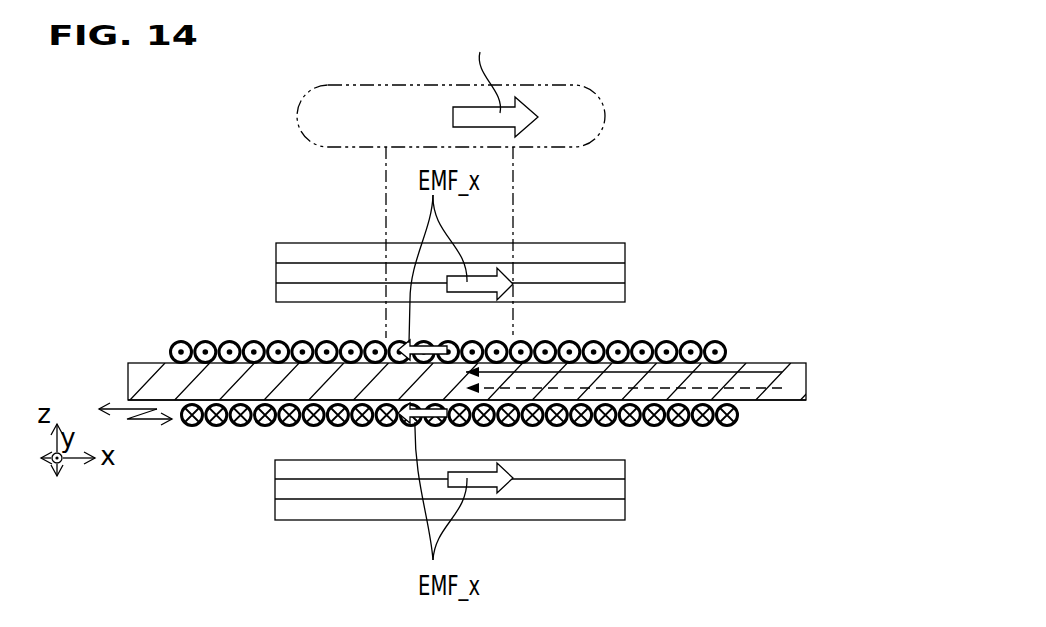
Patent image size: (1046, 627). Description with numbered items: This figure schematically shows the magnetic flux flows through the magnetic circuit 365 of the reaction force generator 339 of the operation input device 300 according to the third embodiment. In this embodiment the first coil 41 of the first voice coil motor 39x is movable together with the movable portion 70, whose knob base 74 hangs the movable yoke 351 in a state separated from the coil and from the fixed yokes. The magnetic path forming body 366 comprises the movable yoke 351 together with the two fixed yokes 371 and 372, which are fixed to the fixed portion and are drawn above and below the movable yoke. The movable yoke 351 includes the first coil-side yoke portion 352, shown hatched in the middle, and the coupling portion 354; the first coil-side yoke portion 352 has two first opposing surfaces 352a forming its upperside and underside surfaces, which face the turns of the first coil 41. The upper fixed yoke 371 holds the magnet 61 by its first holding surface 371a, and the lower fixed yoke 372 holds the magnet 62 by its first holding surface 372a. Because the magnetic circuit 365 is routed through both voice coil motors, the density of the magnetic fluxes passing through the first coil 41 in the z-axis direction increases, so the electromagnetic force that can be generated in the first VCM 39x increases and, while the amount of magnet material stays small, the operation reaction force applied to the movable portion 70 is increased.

The operation input device 300 is at (494, 84).
The movable portion 70 is at (366, 81).
The knob base 74 is at (383, 170).
The reaction force generator 339 is at (437, 225).
The fixed yoke 371 is at (437, 234).
The magnetic path forming body 366 is at (473, 375).
The first holding surface 371a is at (625, 266).
The magnet 61 is at (288, 294).
The magnetic circuit 365 is at (473, 352).
The movable yoke 351 is at (473, 396).
The first coil-side yoke portion 352 is at (140, 378).
The coupling portion 354 is at (790, 400).
The first voice coil motor 39x is at (450, 352).
The first coil 41 is at (720, 342).
The first opposing surfaces 352a is at (450, 378).
The fixed yoke 372 is at (475, 530).
The first holding surface 372a is at (625, 484).
The magnet 62 is at (280, 471).